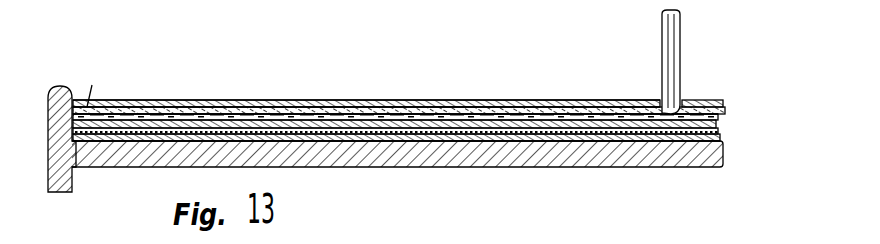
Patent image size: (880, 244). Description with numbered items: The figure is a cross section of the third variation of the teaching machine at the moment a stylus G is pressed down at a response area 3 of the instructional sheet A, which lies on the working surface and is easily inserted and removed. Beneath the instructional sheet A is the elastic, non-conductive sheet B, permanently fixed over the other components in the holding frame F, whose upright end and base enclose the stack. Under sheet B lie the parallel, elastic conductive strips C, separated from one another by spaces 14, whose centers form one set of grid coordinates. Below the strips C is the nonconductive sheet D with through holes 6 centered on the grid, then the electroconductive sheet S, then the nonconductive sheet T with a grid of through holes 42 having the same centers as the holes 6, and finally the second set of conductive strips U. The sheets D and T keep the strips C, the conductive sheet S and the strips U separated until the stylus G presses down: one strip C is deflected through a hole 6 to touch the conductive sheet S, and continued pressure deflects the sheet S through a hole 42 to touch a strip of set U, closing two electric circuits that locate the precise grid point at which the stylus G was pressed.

The holding frame F is at (58, 85).
The set of conductive strips U is at (625, 142).
The nonconductive sheet T is at (550, 141).
The electroconductive sheet S is at (330, 102).
The nonconductive sheet D is at (472, 102).
The conductive strips C is at (162, 98).
The elastic non-conductive sheet B is at (195, 98).
The instructional sheet A is at (262, 100).
The response area 3 is at (355, 100).
The space between conductive strips 14 is at (137, 98).
The through holes 6 is at (425, 110).
The through holes 42 is at (497, 141).
The stylus G is at (681, 17).